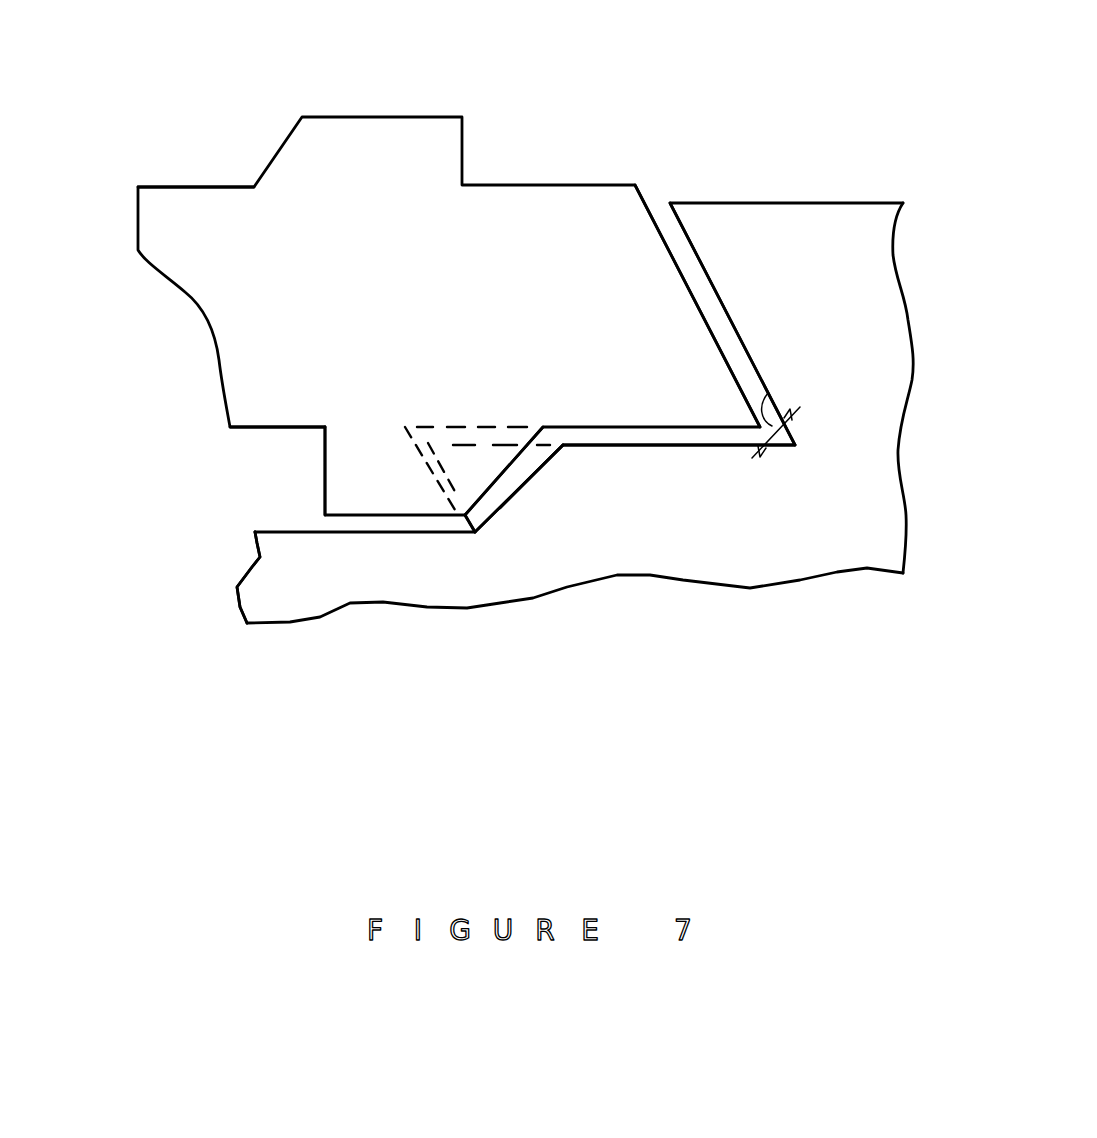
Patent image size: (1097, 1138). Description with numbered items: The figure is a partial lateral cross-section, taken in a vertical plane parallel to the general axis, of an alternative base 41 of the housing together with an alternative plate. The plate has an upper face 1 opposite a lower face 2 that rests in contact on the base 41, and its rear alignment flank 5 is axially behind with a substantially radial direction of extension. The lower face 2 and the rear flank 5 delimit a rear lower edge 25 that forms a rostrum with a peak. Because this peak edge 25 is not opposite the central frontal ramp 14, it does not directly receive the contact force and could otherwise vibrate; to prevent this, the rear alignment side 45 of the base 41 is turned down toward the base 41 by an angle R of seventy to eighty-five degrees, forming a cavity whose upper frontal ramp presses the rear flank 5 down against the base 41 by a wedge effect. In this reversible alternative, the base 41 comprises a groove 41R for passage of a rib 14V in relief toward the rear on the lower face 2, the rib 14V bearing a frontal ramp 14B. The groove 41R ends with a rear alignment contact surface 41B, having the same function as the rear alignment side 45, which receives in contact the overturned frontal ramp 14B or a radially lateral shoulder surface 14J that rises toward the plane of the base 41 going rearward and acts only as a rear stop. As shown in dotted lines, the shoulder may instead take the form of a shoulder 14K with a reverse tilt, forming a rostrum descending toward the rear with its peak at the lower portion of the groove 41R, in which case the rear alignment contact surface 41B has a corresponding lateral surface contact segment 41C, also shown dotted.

The upper face 1 is at (172, 181).
The lower face 2 is at (262, 428).
The rear alignment flank 5 is at (668, 234).
The central frontal ramp 14 is at (278, 147).
The rib 14V is at (362, 475).
The shoulder 14K is at (441, 491).
The frontal ramp 14B is at (497, 505).
The radially lateral shoulder surface 14J is at (524, 479).
The rear lower edge 25 is at (753, 443).
The base 41 is at (672, 445).
The groove 41R is at (266, 519).
The lateral surface contact segment 41C is at (435, 447).
The rear alignment contact surface 41B is at (507, 502).
The rear alignment side 45 is at (708, 290).
The angle R is at (768, 410).